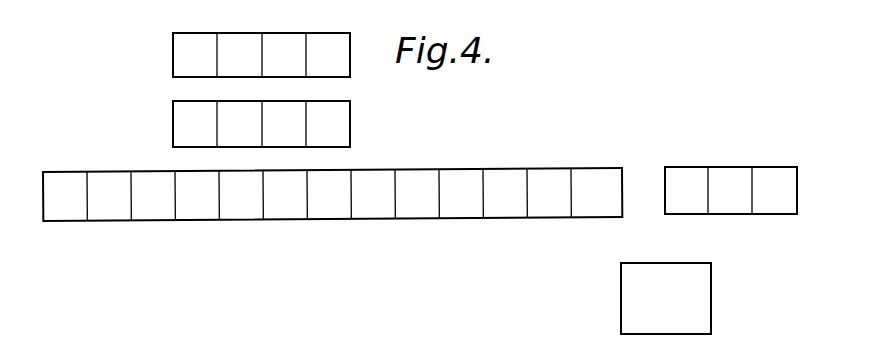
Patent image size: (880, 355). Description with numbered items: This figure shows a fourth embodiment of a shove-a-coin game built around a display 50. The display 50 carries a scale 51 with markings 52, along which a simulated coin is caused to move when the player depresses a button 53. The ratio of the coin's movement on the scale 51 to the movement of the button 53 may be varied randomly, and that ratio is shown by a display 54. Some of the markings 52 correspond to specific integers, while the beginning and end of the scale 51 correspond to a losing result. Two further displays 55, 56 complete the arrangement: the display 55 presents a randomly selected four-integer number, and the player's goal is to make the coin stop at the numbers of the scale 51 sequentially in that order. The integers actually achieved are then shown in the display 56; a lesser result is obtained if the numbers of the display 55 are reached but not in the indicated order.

The display 50 is at (482, 109).
The scale 51 is at (238, 222).
The markings 52 is at (143, 177).
The button 53 is at (621, 273).
The display 54 is at (696, 165).
The display 55 is at (173, 50).
The display 56 is at (173, 120).